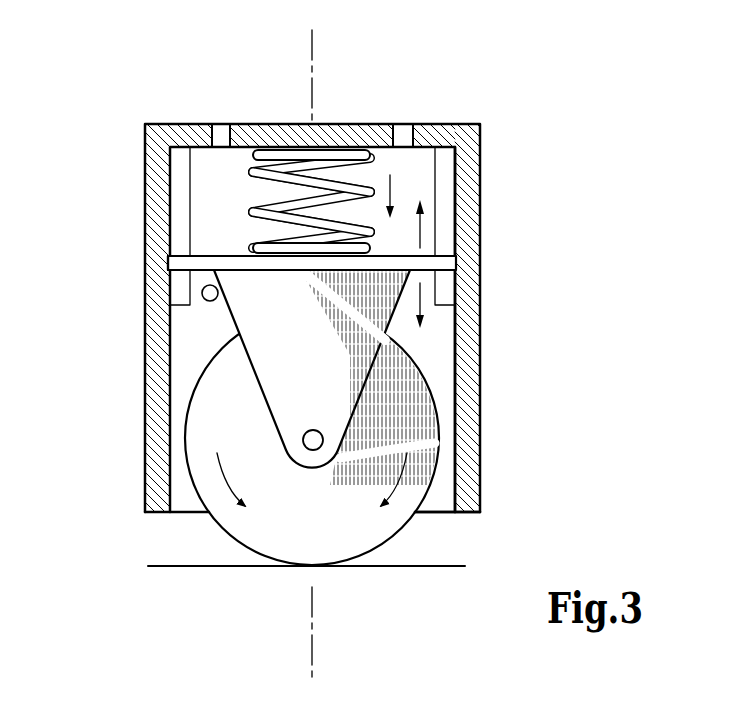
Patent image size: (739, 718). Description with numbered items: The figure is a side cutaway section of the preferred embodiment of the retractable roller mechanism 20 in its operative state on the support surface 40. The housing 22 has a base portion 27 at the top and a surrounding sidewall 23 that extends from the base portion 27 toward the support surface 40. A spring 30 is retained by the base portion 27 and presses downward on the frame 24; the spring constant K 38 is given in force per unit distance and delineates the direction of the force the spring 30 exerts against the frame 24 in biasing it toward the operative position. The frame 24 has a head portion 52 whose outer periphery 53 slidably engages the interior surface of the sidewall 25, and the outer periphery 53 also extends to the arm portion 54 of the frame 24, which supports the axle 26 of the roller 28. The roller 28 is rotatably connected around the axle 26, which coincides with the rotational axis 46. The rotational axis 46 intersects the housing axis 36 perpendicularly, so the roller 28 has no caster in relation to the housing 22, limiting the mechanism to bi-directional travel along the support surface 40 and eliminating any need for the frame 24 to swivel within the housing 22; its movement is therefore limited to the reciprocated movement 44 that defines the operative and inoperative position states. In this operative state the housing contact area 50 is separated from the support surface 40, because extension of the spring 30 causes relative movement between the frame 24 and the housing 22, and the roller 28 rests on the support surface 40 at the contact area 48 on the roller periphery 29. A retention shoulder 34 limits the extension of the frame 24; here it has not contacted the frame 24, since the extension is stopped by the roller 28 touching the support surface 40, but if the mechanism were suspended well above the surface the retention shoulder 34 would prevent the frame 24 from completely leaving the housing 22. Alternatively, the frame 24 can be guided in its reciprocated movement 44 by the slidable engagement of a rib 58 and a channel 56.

The retractable roller mechanism 20 is at (497, 99).
The housing 22 is at (145, 362).
The sidewall 23 is at (473, 310).
The frame 24 is at (226, 256).
The interior surface of the sidewall 25 is at (458, 347).
The axle 26 is at (313, 451).
The base portion 27 is at (378, 124).
The roller 28 is at (325, 567).
The roller periphery 29 is at (434, 400).
The spring 30 is at (253, 172).
The retention shoulder 34 is at (203, 302).
The housing axis 36 is at (313, 50).
The spring constant K 38 is at (395, 185).
The support surface 40 is at (180, 567).
The reciprocated movement 44 is at (422, 290).
The rotational axis 46 is at (303, 438).
The contact area 48 is at (350, 538).
The housing contact area 50 is at (470, 514).
The head portion 52 is at (173, 261).
The outer periphery 53 is at (170, 272).
The arm portion 54 is at (283, 377).
The channel 56 is at (187, 254).
The rib 58 is at (180, 158).